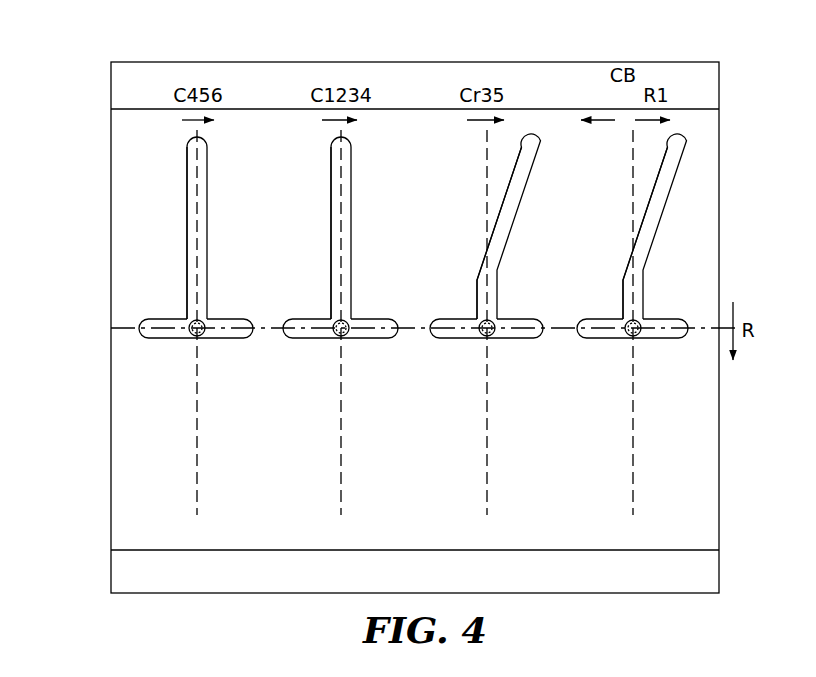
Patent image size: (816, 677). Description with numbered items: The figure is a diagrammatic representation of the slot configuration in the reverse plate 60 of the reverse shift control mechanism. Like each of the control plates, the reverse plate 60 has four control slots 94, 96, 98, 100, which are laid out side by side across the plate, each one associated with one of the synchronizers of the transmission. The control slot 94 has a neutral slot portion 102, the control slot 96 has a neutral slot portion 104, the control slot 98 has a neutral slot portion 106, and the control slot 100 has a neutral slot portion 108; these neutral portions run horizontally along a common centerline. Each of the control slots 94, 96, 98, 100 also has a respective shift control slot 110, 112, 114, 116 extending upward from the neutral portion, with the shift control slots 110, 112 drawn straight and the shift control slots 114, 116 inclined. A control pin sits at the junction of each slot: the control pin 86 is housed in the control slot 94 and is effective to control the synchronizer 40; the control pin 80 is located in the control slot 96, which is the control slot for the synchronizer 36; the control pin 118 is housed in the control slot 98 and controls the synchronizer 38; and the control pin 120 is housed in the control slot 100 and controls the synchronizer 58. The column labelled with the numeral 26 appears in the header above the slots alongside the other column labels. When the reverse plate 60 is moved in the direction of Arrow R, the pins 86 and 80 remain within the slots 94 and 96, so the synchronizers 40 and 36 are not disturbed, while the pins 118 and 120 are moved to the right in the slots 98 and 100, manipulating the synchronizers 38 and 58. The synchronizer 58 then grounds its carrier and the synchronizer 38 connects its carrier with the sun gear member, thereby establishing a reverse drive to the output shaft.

The reverse plate 60 is at (109, 527).
The synchronizer 40 is at (197, 276).
The synchronizer 36 is at (341, 276).
The synchronizer 38 is at (487, 276).
The synchronizer 58 is at (633, 276).
The center board position 26 is at (598, 102).
The control slot 94 is at (206, 207).
The control slot 96 is at (350, 207).
The control slot 98 is at (523, 197).
The control slot 100 is at (665, 218).
The shift control slot 110 is at (192, 257).
The shift control slot 112 is at (337, 257).
The shift control slot 114 is at (500, 237).
The shift control slot 116 is at (642, 237).
The control pin 86 is at (206, 322).
The control pin 80 is at (350, 322).
The control pin 118 is at (497, 322).
The control pin 120 is at (644, 322).
The neutral slot portion 102 is at (225, 335).
The neutral slot portion 104 is at (370, 335).
The neutral slot portion 106 is at (512, 335).
The neutral slot portion 108 is at (653, 335).